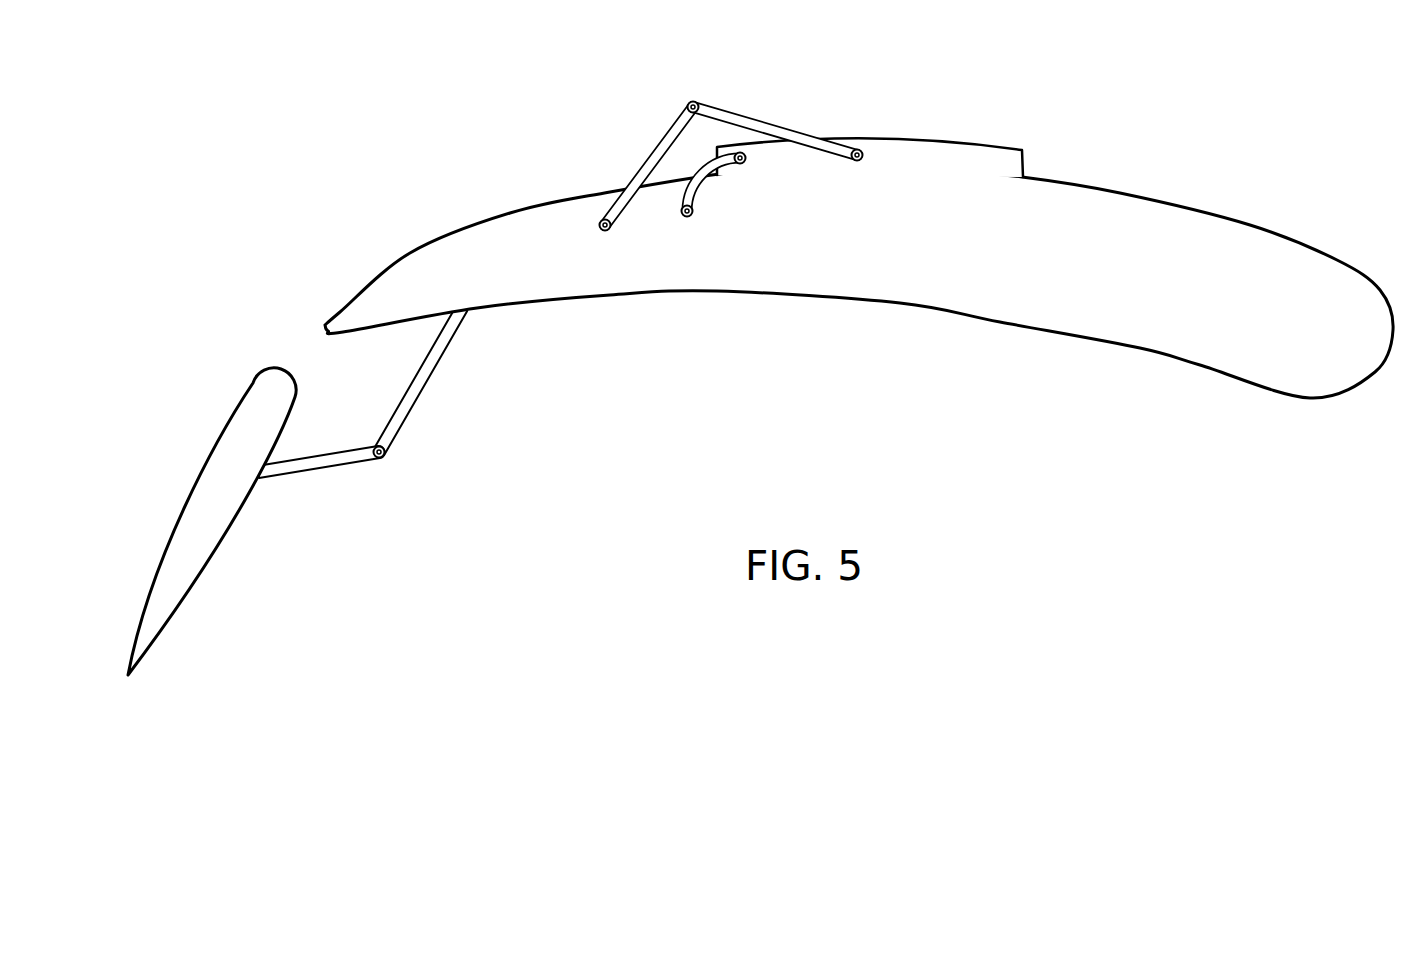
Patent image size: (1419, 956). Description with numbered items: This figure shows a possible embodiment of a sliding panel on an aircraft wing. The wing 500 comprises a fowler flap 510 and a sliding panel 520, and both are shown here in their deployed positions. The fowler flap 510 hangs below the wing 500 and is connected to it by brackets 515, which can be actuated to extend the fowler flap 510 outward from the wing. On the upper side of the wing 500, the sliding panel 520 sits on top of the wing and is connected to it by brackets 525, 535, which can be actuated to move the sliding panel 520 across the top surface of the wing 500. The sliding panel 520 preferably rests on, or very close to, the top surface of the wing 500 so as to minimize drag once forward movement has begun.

The wing 500 is at (1230, 221).
The fowler flap 510 is at (183, 507).
The brackets 515 is at (437, 378).
The sliding panel 520 is at (970, 141).
The brackets 525 is at (652, 148).
The brackets 535 is at (703, 193).